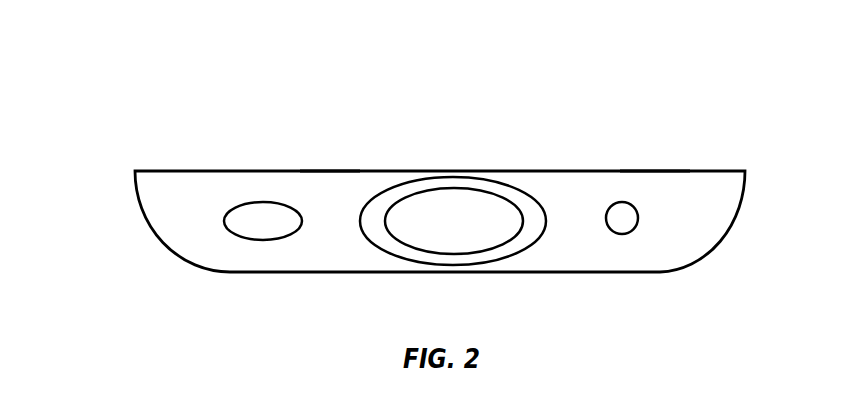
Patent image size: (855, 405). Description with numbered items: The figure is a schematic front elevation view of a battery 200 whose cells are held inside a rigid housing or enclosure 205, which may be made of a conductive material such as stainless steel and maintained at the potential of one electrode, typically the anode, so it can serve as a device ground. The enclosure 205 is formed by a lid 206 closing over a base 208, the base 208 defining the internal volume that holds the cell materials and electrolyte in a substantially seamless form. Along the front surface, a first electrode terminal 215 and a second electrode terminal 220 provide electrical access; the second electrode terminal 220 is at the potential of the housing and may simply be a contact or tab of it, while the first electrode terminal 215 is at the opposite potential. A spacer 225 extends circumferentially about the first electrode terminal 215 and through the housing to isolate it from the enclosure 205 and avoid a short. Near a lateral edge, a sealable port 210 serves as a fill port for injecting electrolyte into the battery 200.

The battery 200 is at (98, 91).
The enclosure 205 is at (333, 170).
The lid 206 is at (652, 170).
The base 208 is at (717, 243).
The port 210 is at (618, 234).
The first electrode terminal 215 is at (463, 188).
The second electrode terminal 220 is at (258, 239).
The spacer 225 is at (522, 188).